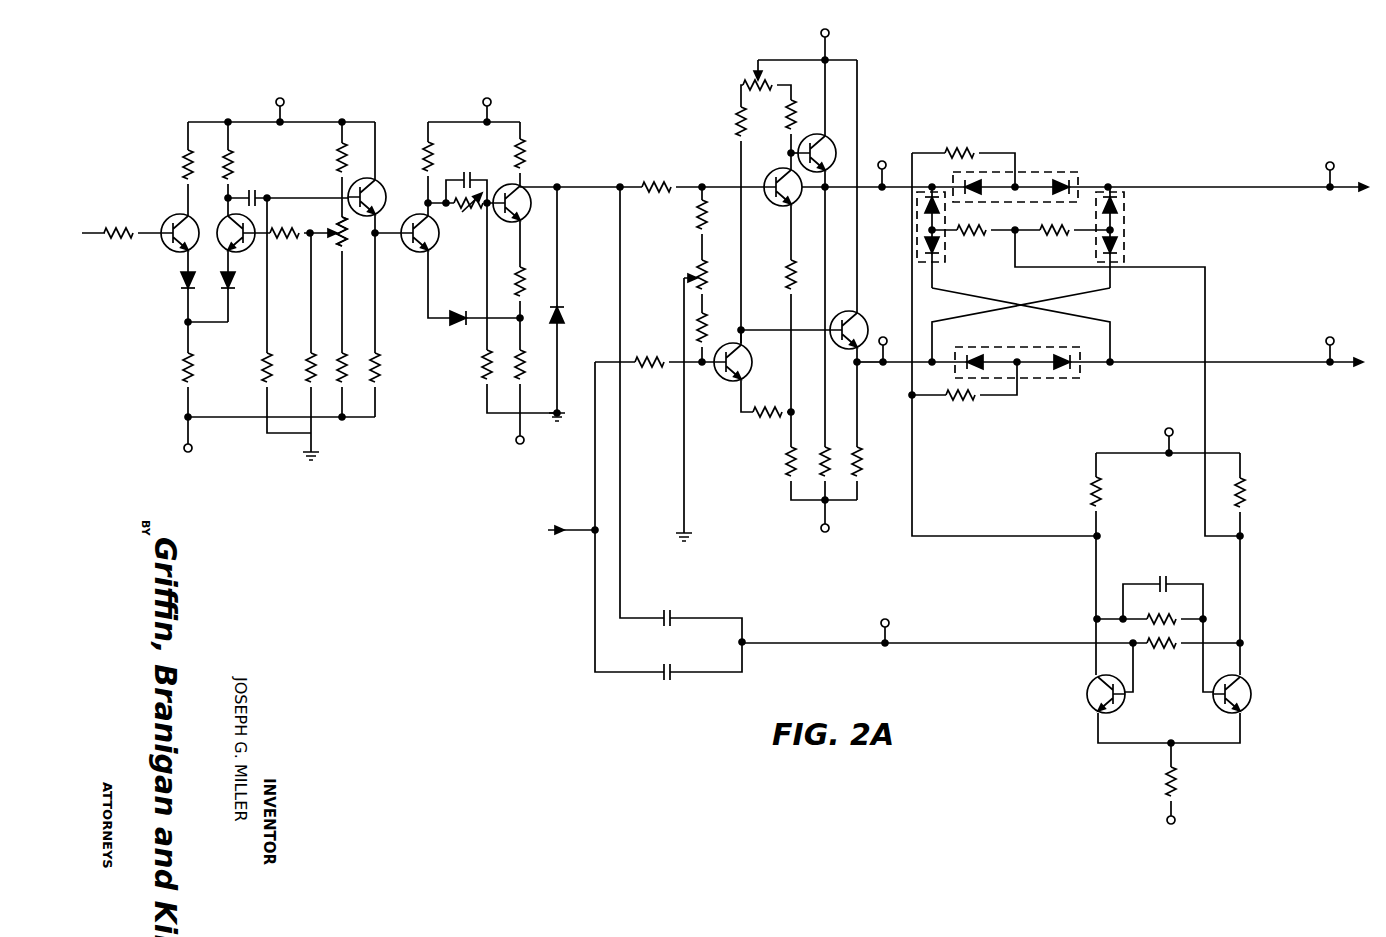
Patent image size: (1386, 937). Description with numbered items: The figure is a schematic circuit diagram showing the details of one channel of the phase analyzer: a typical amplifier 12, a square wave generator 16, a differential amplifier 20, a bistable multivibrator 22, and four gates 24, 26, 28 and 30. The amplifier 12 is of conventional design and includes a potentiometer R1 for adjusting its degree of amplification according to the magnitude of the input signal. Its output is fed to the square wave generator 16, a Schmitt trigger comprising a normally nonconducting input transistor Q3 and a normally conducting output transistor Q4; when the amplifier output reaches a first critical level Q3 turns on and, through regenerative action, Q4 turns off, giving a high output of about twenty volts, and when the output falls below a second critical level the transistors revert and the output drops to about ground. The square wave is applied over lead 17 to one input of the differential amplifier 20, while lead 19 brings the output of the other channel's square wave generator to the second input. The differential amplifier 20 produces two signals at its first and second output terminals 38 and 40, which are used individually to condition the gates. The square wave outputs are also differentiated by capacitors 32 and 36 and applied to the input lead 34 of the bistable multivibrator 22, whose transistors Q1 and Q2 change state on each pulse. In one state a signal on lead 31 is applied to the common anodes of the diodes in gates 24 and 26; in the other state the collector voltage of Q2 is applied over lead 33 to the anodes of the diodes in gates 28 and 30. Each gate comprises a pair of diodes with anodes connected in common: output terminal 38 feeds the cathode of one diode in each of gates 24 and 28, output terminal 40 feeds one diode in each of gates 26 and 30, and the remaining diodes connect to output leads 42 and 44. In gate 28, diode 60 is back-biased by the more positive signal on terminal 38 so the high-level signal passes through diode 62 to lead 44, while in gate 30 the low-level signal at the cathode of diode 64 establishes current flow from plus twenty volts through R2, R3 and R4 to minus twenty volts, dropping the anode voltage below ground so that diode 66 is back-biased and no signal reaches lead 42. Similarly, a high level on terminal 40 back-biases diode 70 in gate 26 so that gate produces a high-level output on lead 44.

The amplifier 12 is at (241, 276).
The square wave generator 16 is at (492, 276).
The lead 17 is at (587, 186).
The lead 19 is at (574, 527).
The differential amplifier 20 is at (747, 281).
The bistable multivibrator 22 is at (1186, 623).
The gate 24 is at (1044, 172).
The gate 26 is at (1021, 345).
The gate 28 is at (931, 237).
The gate 30 is at (1133, 237).
The lead 31 is at (1005, 538).
The capacitor 32 is at (678, 668).
The lead 33 is at (1208, 398).
The input lead 34 is at (940, 645).
The capacitor 36 is at (677, 613).
The first output terminal 38 is at (895, 186).
The second output terminal 40 is at (895, 366).
The lead 42 is at (1218, 185).
The lead 44 is at (1268, 360).
The diode 60 is at (923, 202).
The diode 62 is at (925, 246).
The diode 64 is at (1125, 250).
The diode 66 is at (1116, 198).
The diode 70 is at (980, 353).
The transistor Q1 is at (1088, 696).
The transistor Q2 is at (1252, 700).
The input transistor Q3 is at (438, 243).
The output transistor Q4 is at (531, 211).
The potentiometer R1 is at (354, 250).
The resistance R2 is at (1246, 497).
The resistance R3 is at (1070, 237).
The resistance R4 is at (865, 473).